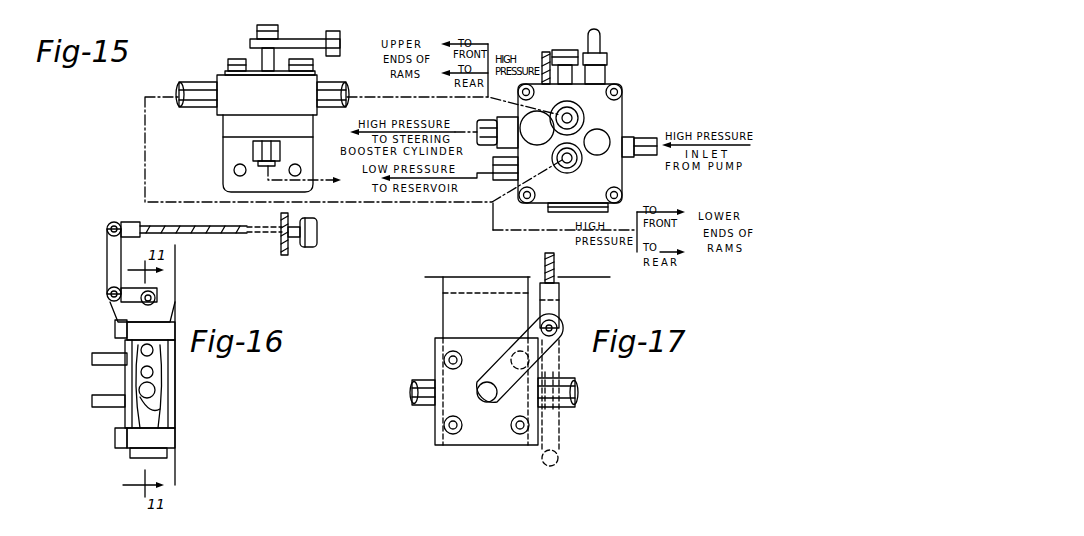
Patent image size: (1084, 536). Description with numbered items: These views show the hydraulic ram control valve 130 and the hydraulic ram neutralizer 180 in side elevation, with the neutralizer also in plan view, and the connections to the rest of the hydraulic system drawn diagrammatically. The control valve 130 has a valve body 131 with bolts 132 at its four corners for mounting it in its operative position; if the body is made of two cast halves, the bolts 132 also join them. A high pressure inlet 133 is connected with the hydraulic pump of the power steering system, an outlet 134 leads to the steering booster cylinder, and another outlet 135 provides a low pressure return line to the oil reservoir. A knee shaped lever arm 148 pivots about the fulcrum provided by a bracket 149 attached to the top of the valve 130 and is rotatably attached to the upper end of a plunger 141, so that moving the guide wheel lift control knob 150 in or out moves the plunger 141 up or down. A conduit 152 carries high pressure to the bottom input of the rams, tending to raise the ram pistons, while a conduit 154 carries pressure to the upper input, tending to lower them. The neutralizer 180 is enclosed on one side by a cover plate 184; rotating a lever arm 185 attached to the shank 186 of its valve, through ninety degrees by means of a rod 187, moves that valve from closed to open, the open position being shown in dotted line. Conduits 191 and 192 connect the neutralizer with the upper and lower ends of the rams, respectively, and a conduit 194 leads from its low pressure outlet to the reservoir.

In FIG. 15, the hydraulic ram control valve 130 is at (623, 93).
In FIG. 15, the valve body 131 is at (552, 208).
In FIG. 16, the valve body 131 is at (167, 441).
In FIG. 15, the bolts 132 is at (622, 195).
In FIG. 16, the bolts 132 is at (115, 330).
In FIG. 15, the high pressure inlet 133 is at (628, 156).
In FIG. 16, the high pressure inlet 133 is at (160, 410).
In FIG. 15, the outlet 134 is at (510, 119).
In FIG. 15, the outlet 135 is at (520, 168).
In FIG. 15, the plunger 141 is at (588, 50).
In FIG. 16, the plunger 141 is at (157, 301).
In FIG. 15, the knee shaped lever arm 148 is at (563, 50).
In FIG. 16, the knee shaped lever arm 148 is at (107, 252).
In FIG. 15, the bracket 149 is at (543, 60).
In FIG. 16, the bracket 149 is at (112, 308).
In FIG. 16, the guide wheel lift control knob 150 is at (317, 239).
In FIG. 15, the conduit 152 is at (564, 171).
In FIG. 16, the conduit 152 is at (93, 402).
In FIG. 15, the conduit 154 is at (570, 117).
In FIG. 16, the conduit 154 is at (98, 366).
In FIG. 15, the hydraulic ram neutralizer 180 is at (216, 116).
In FIG. 17, the hydraulic ram neutralizer 180 is at (436, 358).
In FIG. 17, the cover plate 184 is at (455, 405).
In FIG. 15, the lever arm 185 is at (329, 38).
In FIG. 17, the lever arm 185 is at (530, 339).
In FIG. 15, the shank 186 is at (262, 56).
In FIG. 17, the shank 186 is at (487, 398).
In FIG. 17, the rod 187 is at (554, 270).
In FIG. 15, the conduit 191 is at (329, 88).
In FIG. 17, the conduit 191 is at (570, 389).
In FIG. 15, the conduit 192 is at (199, 82).
In FIG. 17, the conduit 192 is at (412, 390).
In FIG. 15, the conduit 194 is at (281, 151).